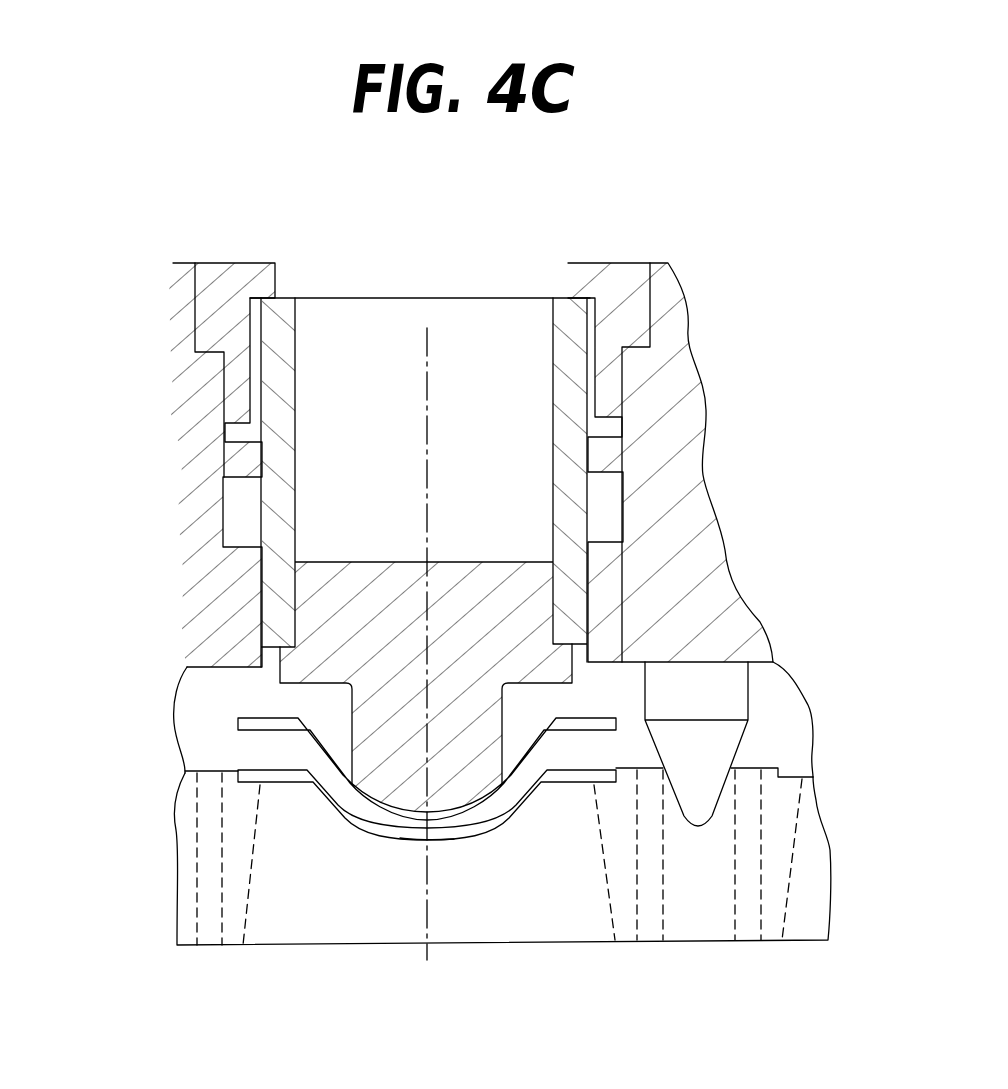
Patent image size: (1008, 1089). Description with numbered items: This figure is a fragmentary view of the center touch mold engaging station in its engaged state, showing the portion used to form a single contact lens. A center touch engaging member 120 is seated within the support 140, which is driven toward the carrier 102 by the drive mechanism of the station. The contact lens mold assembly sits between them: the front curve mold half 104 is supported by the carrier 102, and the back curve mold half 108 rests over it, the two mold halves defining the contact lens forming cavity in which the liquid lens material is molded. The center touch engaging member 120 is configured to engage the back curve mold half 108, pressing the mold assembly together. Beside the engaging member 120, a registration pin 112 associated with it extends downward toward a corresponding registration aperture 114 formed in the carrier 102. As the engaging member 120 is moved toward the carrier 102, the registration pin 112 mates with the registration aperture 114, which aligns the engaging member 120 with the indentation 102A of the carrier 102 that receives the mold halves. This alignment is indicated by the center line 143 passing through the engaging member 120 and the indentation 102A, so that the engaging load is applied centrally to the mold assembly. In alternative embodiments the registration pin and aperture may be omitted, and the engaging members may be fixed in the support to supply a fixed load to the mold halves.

The carrier 102 is at (178, 927).
The indentation of the carrier 102A is at (448, 836).
The front curve mold half 104 is at (312, 803).
The back curve mold half 108 is at (302, 752).
The registration pin 112 is at (735, 737).
The registration aperture 114 is at (698, 895).
The center touch engaging member 120 is at (352, 707).
The support 140 is at (668, 375).
The center line 143 is at (427, 328).